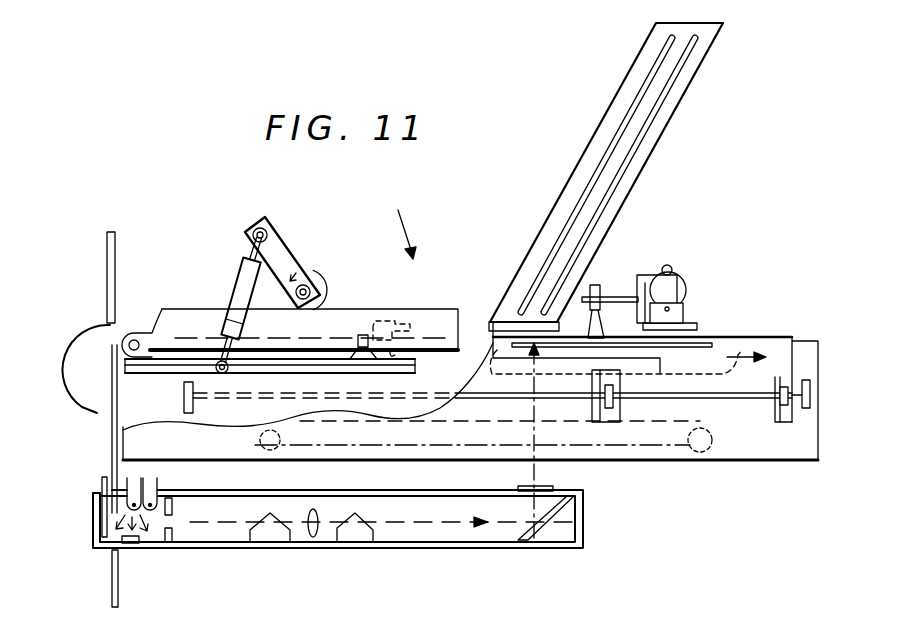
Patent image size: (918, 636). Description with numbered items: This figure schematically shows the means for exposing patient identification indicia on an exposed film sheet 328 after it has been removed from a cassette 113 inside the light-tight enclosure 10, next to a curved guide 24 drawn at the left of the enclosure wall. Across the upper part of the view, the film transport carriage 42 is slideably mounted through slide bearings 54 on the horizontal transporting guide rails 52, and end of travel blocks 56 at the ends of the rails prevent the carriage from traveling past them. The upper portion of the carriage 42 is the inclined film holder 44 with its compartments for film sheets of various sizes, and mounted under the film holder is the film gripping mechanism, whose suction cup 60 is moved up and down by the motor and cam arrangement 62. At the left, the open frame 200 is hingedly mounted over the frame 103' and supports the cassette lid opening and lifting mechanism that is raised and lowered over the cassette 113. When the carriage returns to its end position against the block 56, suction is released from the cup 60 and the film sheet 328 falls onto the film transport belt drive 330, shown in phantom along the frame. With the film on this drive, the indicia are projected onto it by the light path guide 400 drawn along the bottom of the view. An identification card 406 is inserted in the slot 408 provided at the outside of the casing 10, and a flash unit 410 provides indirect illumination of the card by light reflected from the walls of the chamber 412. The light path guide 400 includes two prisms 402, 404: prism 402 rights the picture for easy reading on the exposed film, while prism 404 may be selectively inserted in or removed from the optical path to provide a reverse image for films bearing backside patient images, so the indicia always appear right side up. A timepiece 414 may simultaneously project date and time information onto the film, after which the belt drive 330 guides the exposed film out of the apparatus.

The enclosure 10 is at (108, 284).
The curved guide 24 is at (97, 413).
The film transport carriage 42 is at (778, 342).
The film holder 44 is at (628, 186).
The transporting guide rails 52 is at (506, 395).
The slide bearings 54 is at (622, 402).
The end of travel blocks 56 is at (184, 395).
The suction cup 60 is at (600, 297).
The motor and cam arrangement 62 is at (686, 285).
The frame 103' is at (458, 443).
The cassette 113 is at (156, 332).
The open frame 200 is at (440, 308).
The exposed film sheet 328 is at (720, 336).
The film transport belt drive 330 is at (625, 371).
The light path guide 400 is at (596, 522).
The prism 402 is at (270, 540).
The prism 404 is at (352, 545).
The identification card 406 is at (101, 483).
The slot 408 is at (112, 503).
The flash unit 410 is at (160, 495).
The chamber 412 is at (148, 540).
The timepiece 414 is at (134, 545).